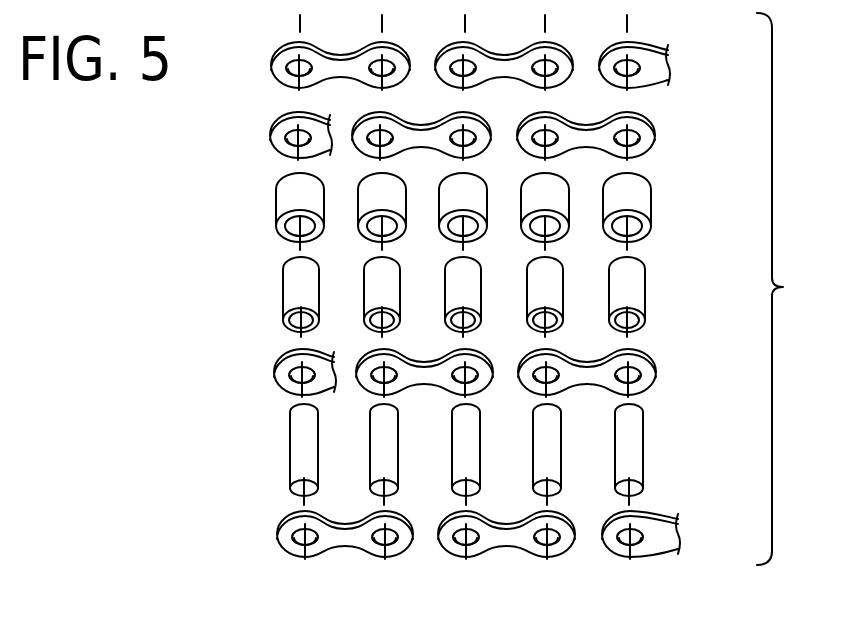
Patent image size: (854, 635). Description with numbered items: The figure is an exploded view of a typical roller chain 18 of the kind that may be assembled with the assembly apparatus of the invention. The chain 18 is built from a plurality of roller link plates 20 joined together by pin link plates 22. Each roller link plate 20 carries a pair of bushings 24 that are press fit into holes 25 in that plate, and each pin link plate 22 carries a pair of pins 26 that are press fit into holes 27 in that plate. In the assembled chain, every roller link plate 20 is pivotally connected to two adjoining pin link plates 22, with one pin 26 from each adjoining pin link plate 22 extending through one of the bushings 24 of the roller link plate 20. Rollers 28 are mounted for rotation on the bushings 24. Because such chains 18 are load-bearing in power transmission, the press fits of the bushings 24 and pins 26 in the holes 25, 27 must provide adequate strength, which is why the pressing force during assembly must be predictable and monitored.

The roller chain 18 is at (499, 287).
The roller link plate 20 is at (263, 119).
The pin link plate 22 is at (315, 45).
The bushing 24 is at (297, 292).
The hole 25 is at (284, 138).
The pin 26 is at (380, 463).
The hole 27 is at (622, 65).
The roller 28 is at (288, 203).